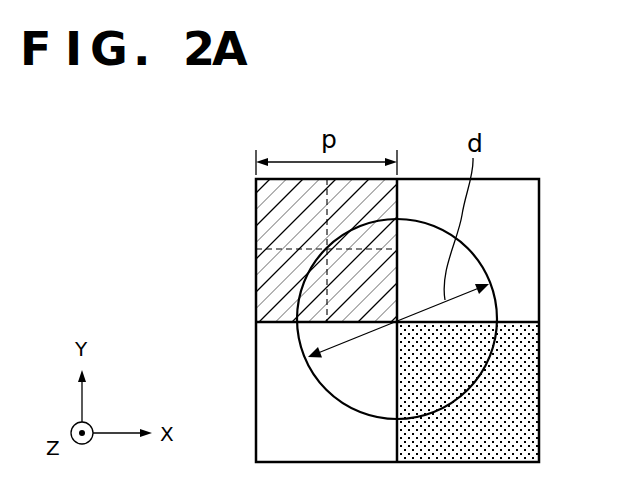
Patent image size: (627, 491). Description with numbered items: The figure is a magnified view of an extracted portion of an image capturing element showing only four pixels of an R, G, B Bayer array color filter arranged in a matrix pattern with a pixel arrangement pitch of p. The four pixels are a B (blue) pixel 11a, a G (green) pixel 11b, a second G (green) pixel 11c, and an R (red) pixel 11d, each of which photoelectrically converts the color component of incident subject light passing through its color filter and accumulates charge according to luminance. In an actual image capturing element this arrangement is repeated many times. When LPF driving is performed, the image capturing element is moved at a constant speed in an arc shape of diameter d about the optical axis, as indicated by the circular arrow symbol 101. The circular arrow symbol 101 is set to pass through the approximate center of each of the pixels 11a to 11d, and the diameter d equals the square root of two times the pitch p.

The B (blue) pixel 11a is at (262, 262).
The G (green) pixel 11b is at (520, 252).
The G (green) pixel 11c is at (258, 398).
The R (red) pixel 11d is at (518, 387).
The arrow symbol of the circle 101 is at (412, 221).